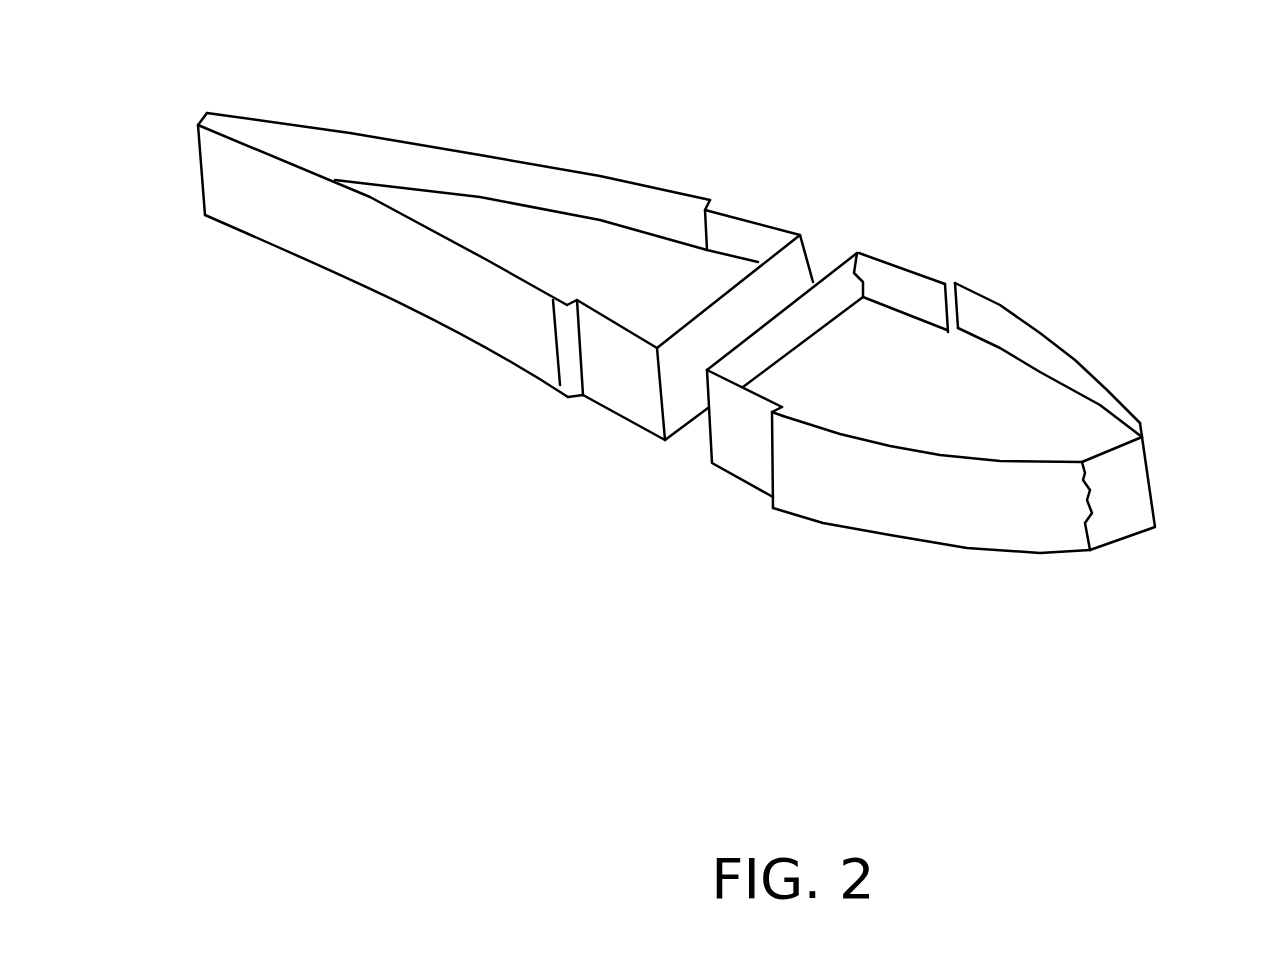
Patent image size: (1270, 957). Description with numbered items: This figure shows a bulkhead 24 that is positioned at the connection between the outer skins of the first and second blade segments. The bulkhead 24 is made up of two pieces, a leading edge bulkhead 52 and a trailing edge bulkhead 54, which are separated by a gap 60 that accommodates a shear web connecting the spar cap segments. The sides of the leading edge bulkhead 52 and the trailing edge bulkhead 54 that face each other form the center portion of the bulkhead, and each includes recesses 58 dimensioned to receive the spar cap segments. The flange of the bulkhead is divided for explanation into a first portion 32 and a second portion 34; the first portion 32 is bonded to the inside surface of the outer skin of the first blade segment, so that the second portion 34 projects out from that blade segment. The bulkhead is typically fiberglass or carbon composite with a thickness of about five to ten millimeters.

The bulkhead 24 is at (1121, 78).
The first portion 32 is at (283, 170).
The second portion 34 is at (283, 220).
The leading edge bulkhead 52 is at (1112, 385).
The trailing edge bulkhead 54 is at (500, 155).
The recesses 58 is at (753, 222).
The gap 60 is at (841, 240).